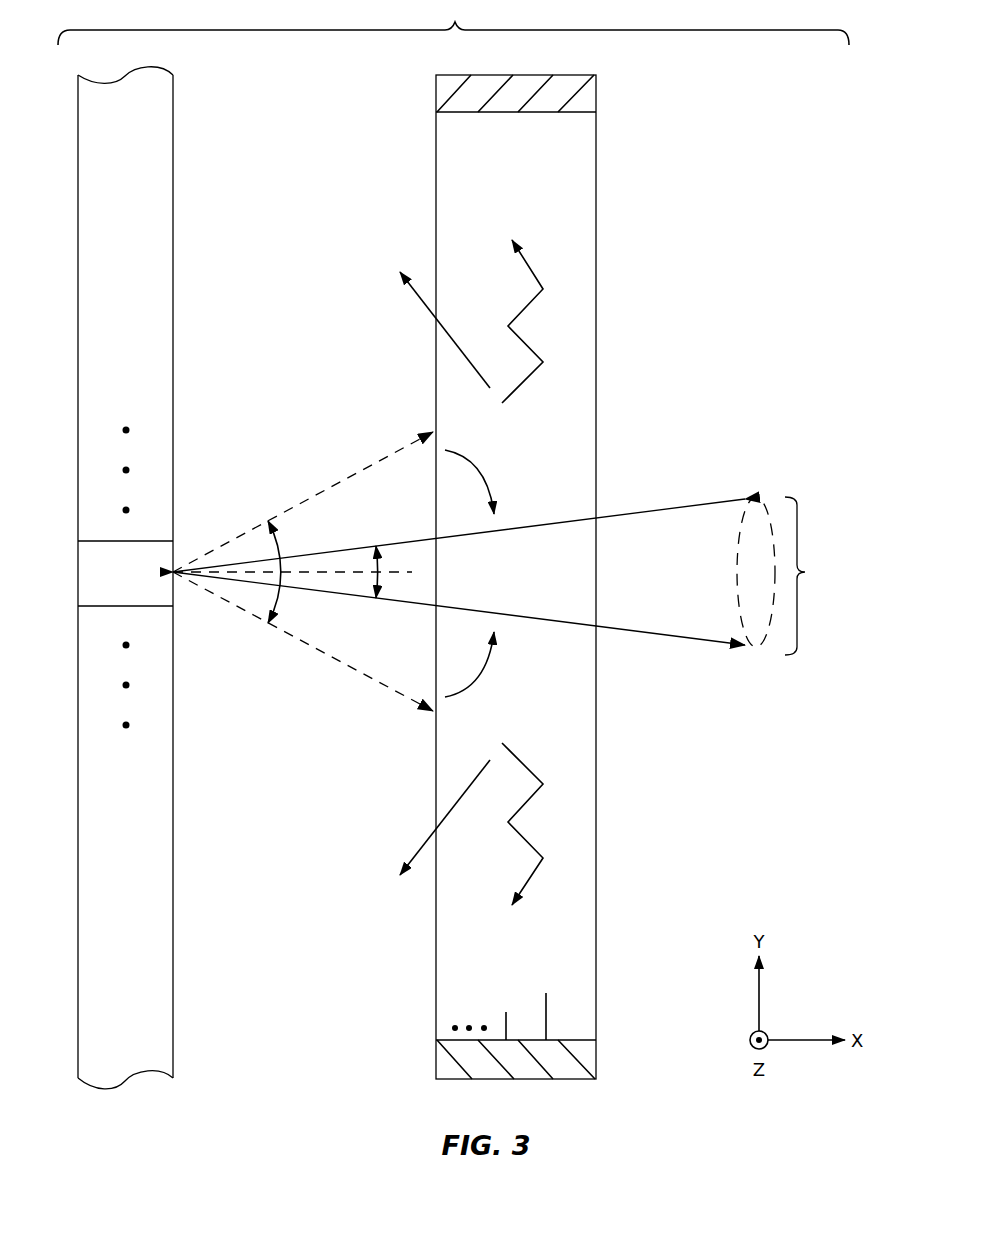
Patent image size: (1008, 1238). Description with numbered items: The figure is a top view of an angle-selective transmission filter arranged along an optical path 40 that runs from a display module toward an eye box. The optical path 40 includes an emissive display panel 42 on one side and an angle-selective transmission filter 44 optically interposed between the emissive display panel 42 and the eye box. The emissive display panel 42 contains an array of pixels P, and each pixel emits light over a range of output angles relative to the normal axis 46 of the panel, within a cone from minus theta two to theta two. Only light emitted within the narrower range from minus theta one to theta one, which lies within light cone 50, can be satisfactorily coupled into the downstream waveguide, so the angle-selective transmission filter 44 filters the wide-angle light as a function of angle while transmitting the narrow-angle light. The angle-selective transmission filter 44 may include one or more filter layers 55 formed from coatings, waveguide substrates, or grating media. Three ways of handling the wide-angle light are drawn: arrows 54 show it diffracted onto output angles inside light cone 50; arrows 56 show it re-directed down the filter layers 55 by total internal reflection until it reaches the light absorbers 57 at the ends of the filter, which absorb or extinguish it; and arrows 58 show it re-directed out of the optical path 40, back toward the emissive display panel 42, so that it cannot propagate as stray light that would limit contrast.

The optical path 40 is at (453, 22).
The emissive display panel 42 is at (163, 147).
The angle-selective transmission filter 44 is at (587, 150).
The normal axis 46 is at (230, 582).
The light cone 50 is at (786, 576).
The arrows 54 is at (480, 467).
The filter layers 55 is at (520, 1024).
The arrows 56 is at (520, 330).
The light absorbers 57 is at (587, 93).
The arrows 58 is at (431, 309).